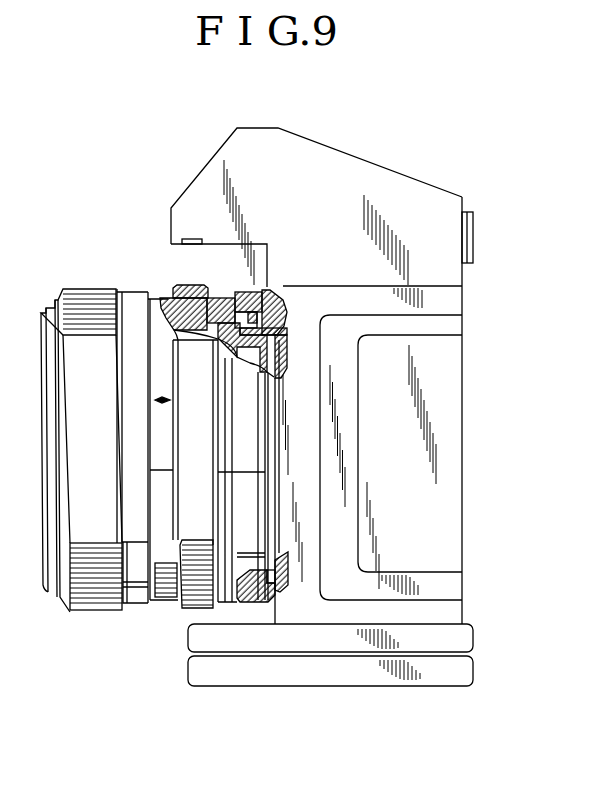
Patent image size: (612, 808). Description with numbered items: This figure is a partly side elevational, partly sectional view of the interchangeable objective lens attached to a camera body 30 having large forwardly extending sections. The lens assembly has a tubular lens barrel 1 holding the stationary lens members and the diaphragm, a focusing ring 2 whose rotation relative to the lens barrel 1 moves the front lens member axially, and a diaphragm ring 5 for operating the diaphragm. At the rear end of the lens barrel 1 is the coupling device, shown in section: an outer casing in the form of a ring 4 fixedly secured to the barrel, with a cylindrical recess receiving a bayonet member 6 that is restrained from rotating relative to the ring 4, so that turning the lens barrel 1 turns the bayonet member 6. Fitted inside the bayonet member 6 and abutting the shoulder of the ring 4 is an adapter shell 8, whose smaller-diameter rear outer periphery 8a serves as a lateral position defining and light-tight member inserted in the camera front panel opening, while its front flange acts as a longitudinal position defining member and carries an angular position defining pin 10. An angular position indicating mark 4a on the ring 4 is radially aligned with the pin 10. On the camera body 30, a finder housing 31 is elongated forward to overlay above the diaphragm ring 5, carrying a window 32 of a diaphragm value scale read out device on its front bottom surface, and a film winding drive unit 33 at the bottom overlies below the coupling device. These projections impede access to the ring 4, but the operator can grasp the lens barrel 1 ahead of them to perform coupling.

The lens barrel 1 is at (163, 300).
The focusing ring 2 is at (92, 297).
The ring 4 is at (220, 297).
The angular position indicating mark 4a is at (250, 287).
The diaphragm ring 5 is at (200, 284).
The bayonet member 6 is at (270, 312).
The adapter shell 8 is at (270, 350).
The outer periphery 8a is at (276, 338).
The angular position defining pin 10 is at (272, 330).
The camera body 30 is at (450, 445).
The finder housing 31 is at (330, 162).
The window 32 is at (192, 238).
The film winding drive unit 33 is at (455, 637).